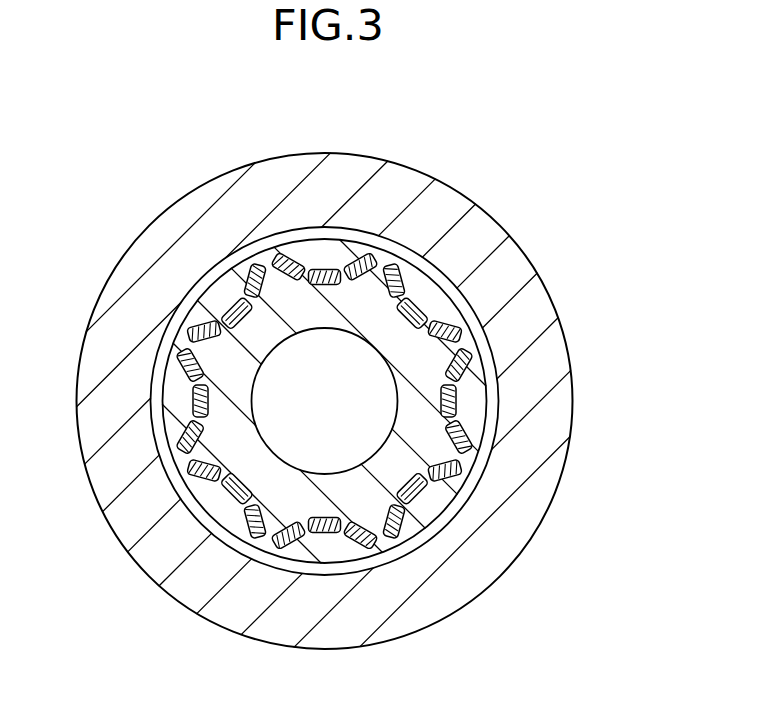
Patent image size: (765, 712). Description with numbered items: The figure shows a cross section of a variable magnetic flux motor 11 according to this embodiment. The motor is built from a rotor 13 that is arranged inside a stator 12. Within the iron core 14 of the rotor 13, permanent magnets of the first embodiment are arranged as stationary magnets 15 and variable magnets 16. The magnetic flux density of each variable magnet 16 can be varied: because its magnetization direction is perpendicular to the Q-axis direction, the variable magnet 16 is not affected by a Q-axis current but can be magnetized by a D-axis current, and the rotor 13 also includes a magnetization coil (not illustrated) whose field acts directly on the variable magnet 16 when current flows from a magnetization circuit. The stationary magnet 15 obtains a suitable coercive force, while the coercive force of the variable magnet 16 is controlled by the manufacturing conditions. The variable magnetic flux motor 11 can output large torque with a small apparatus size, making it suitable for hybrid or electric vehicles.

The variable magnetic flux motor 11 is at (510, 158).
The stator 12 is at (559, 485).
The rotor 13 is at (552, 207).
The iron core 14 is at (440, 318).
The stationary magnet 15 is at (476, 334).
The variable magnet 16 is at (457, 390).